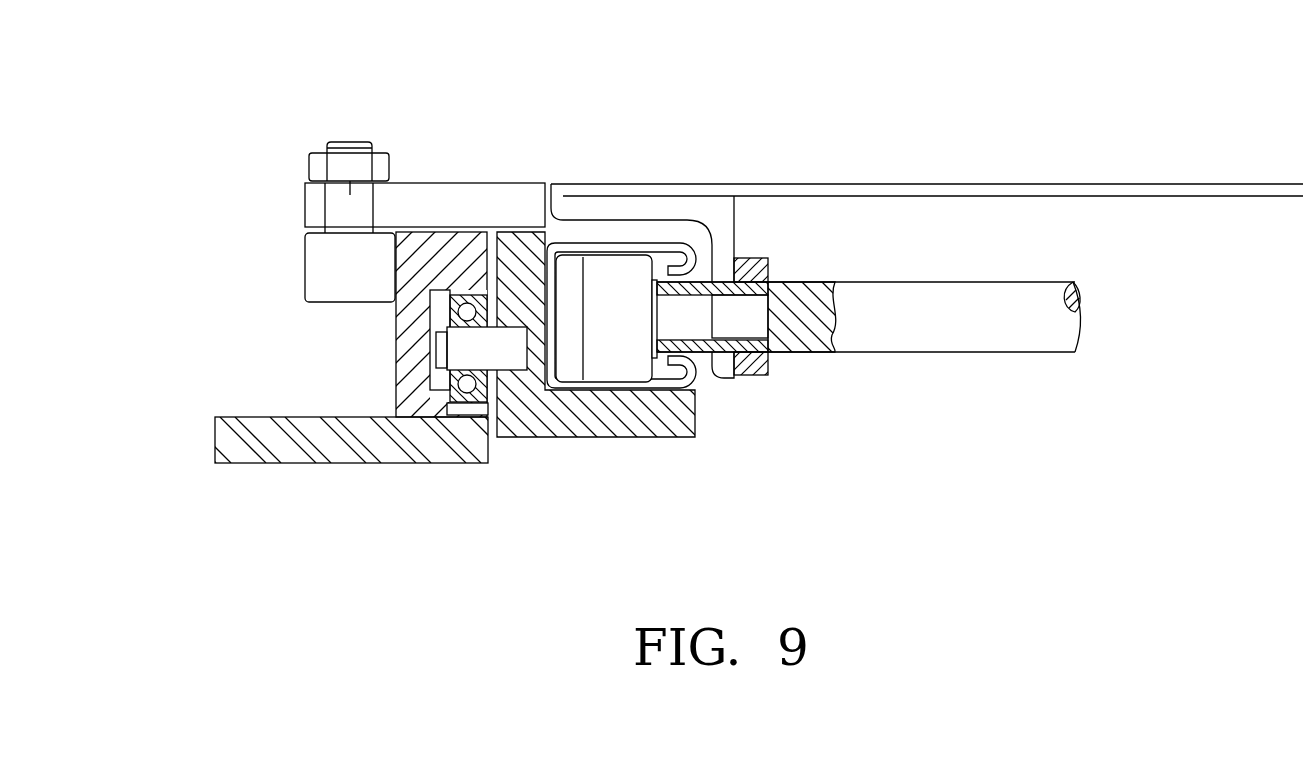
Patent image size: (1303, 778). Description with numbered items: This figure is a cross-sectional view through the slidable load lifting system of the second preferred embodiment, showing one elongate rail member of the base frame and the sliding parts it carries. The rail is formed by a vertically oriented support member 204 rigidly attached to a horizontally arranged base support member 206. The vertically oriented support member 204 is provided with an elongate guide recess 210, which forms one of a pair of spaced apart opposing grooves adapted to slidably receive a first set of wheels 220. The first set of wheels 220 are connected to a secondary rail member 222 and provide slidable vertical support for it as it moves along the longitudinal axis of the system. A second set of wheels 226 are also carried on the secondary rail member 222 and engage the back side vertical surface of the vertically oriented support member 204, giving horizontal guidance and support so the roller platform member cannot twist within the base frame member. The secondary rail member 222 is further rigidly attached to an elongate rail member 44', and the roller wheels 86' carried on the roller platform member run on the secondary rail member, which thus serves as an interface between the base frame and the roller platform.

The base support member 206 is at (268, 481).
The vertically oriented support member 204 is at (378, 379).
The elongate guide recess 210 is at (448, 289).
The first set of wheels 220 is at (463, 422).
The secondary rail member 222 is at (428, 165).
The second set of wheels 226 is at (288, 260).
The elongate rail member 44' is at (925, 219).
The roller wheel 86' is at (606, 318).